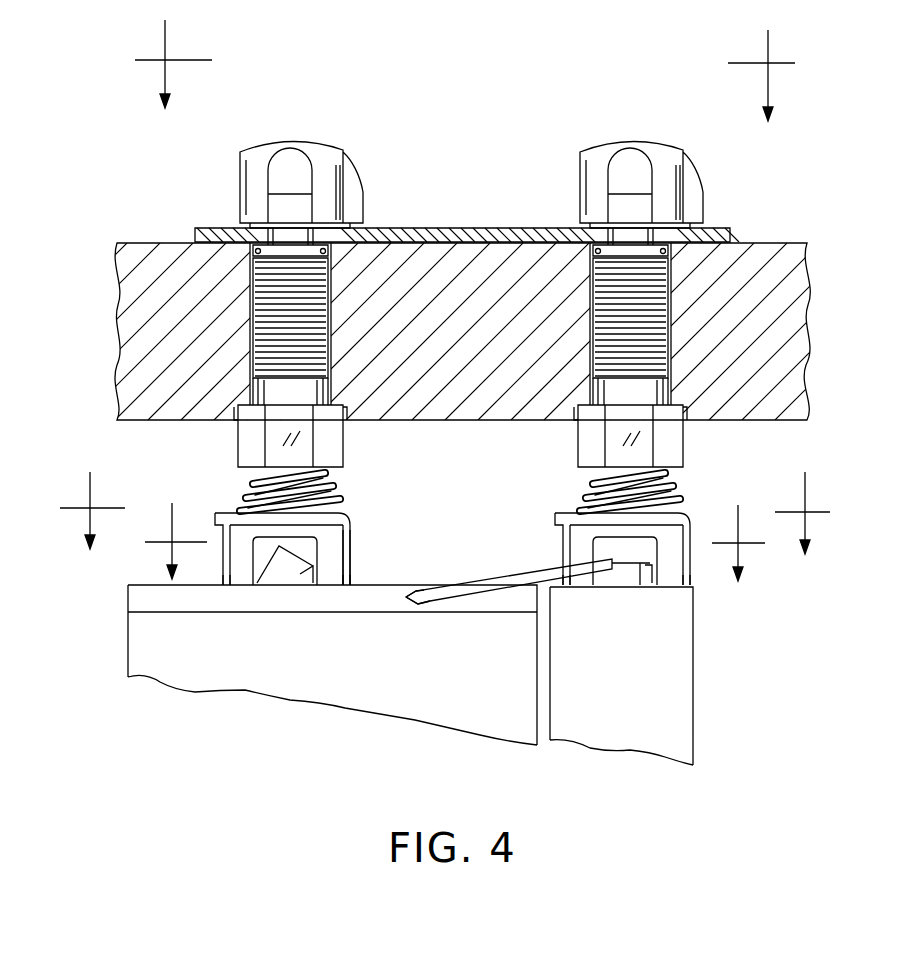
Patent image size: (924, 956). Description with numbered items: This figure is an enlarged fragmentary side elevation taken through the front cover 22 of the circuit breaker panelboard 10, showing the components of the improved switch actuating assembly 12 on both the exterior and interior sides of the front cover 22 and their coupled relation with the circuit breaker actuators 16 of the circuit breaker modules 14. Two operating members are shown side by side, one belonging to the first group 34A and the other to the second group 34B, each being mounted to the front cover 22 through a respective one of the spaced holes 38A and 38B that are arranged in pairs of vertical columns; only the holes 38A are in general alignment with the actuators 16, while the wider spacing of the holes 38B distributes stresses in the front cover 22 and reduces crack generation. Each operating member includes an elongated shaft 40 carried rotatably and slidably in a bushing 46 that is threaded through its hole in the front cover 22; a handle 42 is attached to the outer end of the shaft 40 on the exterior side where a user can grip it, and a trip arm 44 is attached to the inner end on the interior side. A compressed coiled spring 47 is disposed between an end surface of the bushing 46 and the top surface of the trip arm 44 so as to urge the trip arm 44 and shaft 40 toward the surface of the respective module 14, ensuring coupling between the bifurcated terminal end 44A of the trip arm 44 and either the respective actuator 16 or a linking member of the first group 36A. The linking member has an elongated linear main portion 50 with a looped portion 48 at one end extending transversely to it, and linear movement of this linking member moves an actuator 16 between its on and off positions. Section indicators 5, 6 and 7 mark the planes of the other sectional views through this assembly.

The circuit breaker panelboard 10 is at (462, 402).
The switch actuating assembly 12 is at (473, 287).
The circuit breaker module 14 is at (138, 635).
The actuator 16 is at (352, 557).
The front cover 22 is at (797, 278).
The first group of operating members 34A is at (309, 131).
The second group of operating members 34B is at (626, 131).
The first group of linking members 36A is at (488, 672).
The holes in the first pair of vertical columns 38A is at (253, 300).
The holes in the second pair of vertical columns 38B is at (668, 305).
The shaft 40 is at (300, 466).
The handle 42 is at (240, 188).
The trip arm 44 is at (440, 613).
The terminal end of trip arm 44A is at (325, 584).
The bushing 46 is at (238, 410).
The compressed coiled spring 47 is at (338, 490).
The looped portion 48 is at (645, 574).
The main portion 50 is at (414, 688).
The section line 5- 5 is at (465, 70).
The section line 6- 6 is at (445, 513).
The section line 7- 7 is at (455, 542).